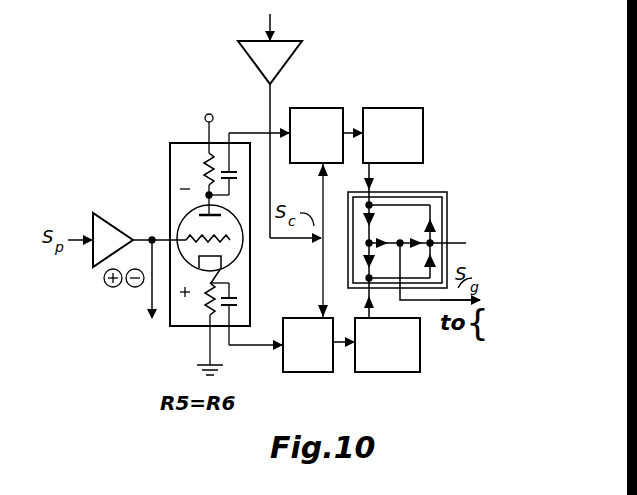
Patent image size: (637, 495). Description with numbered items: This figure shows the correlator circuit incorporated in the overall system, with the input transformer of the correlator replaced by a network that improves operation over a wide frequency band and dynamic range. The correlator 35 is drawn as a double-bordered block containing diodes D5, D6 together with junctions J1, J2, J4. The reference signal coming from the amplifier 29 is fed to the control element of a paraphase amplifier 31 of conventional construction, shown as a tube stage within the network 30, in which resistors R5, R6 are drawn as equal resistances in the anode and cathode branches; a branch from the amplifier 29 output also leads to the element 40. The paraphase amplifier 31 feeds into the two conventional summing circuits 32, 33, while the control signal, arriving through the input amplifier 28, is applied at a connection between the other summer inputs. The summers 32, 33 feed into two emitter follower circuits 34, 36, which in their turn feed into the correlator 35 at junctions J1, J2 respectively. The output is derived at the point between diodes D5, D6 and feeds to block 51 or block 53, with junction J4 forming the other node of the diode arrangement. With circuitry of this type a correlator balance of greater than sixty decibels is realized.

The amplifier 28 is at (255, 57).
The reference signal source 29 is at (135, 222).
The phase detector circuit 30 is at (182, 104).
The paraphase amplifier 31 is at (186, 244).
The summing circuit 32 is at (333, 103).
The summing circuit 33 is at (308, 364).
The emitter follower circuit 34 is at (393, 118).
The correlator 35 is at (397, 240).
The emitter follower circuit 36 is at (387, 364).
The circuit 40 (external) 40 is at (150, 312).
The block 51 is at (453, 285).
The block 53 is at (473, 323).
The resistor R5 is at (203, 172).
The resistor R6 is at (205, 322).
The junction J1 is at (372, 204).
The junction J2 is at (366, 280).
The junction J4 is at (447, 223).
The diode D5 is at (380, 233).
The diode D6 is at (414, 231).